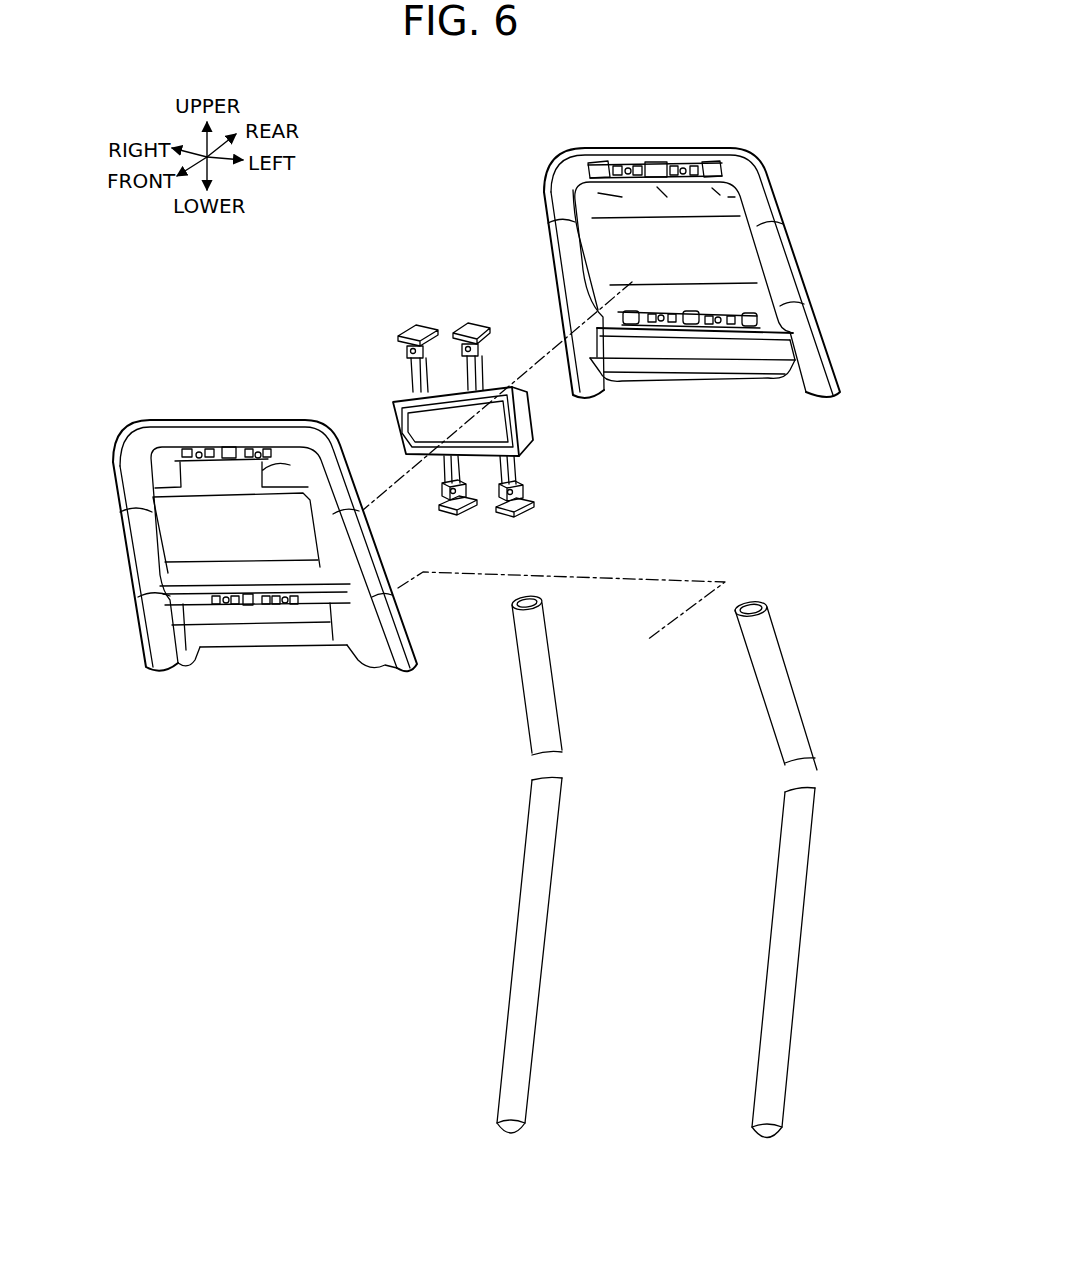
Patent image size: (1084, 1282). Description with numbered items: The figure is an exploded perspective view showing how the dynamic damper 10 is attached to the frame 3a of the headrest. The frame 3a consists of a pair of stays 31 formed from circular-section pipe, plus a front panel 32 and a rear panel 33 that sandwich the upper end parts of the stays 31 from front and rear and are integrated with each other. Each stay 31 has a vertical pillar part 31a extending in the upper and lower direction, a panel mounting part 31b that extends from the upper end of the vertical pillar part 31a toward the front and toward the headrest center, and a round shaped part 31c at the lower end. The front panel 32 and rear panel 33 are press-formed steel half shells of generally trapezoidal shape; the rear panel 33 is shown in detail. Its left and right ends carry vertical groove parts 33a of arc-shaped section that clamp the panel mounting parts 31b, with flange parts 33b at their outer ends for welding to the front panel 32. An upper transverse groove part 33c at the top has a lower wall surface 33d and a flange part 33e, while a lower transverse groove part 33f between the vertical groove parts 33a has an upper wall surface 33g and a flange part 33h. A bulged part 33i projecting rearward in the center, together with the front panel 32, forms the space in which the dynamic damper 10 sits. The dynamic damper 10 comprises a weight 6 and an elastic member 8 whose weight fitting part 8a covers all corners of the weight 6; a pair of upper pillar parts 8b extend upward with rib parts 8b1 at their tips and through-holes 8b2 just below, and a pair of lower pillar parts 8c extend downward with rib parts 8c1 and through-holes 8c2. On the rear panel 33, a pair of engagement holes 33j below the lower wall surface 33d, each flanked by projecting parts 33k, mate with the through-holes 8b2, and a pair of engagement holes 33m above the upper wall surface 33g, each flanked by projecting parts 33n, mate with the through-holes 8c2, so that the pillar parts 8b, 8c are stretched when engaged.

The frame 3a is at (404, 182).
The dynamic damper 10 is at (426, 300).
The weight 6 is at (423, 427).
The elastic member 8 is at (527, 426).
The weight fitting part 8a is at (397, 423).
The upper pillar parts 8b is at (490, 368).
The rib parts 8b1 is at (408, 330).
The through-holes 8b2 is at (468, 345).
The lower pillar parts 8c is at (521, 462).
The rib parts 8c1 is at (454, 513).
The through-holes 8c2 is at (447, 496).
The front panel 32 is at (215, 417).
The rear panel 33 is at (542, 160).
The vertical groove parts 33a is at (780, 258).
The flange parts 33b is at (784, 216).
The upper transverse groove part 33c is at (711, 162).
The lower wall surface 33d is at (597, 162).
The flange part 33e is at (722, 150).
The lower transverse groove part 33f is at (738, 347).
The upper wall surface 33g is at (650, 330).
The flange part 33h is at (722, 377).
The bulged part 33i is at (605, 240).
The engagement holes 33j is at (705, 165).
The projecting parts 33k is at (696, 220).
The engagement holes 33m is at (712, 326).
The projecting parts 33n is at (725, 312).
The stays 31 is at (593, 874).
The vertical pillar part 31a is at (518, 920).
The panel mounting part 31b is at (525, 704).
The round shaped part 31c is at (502, 1128).